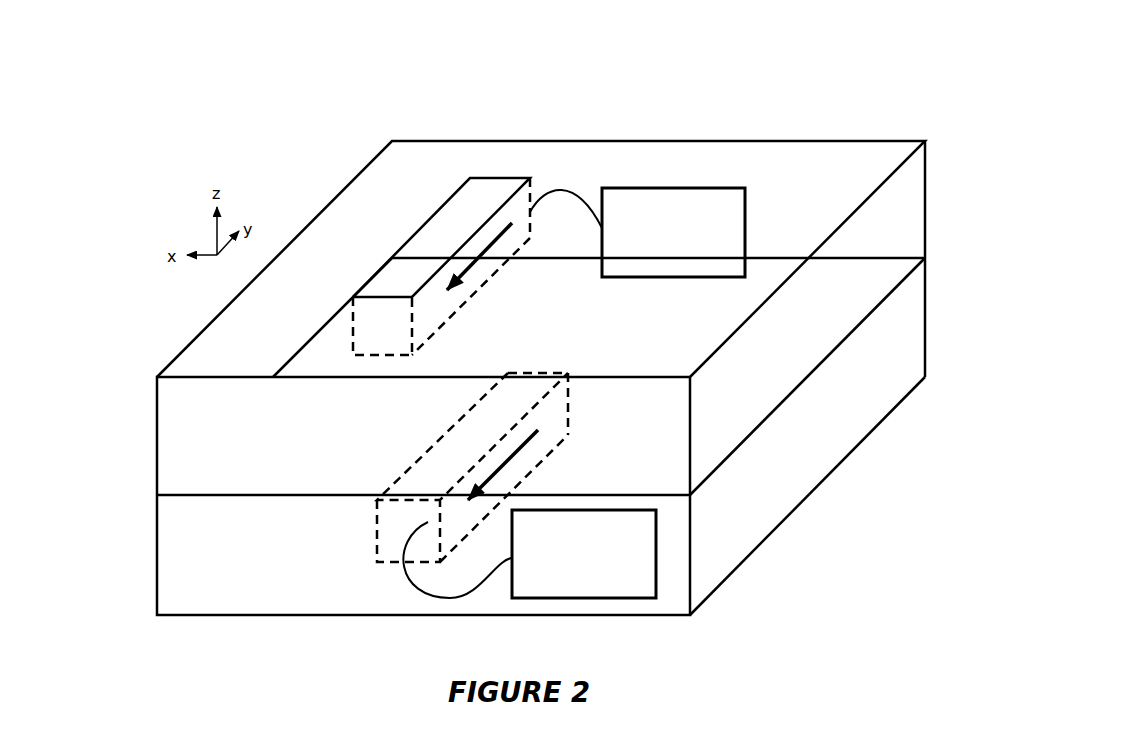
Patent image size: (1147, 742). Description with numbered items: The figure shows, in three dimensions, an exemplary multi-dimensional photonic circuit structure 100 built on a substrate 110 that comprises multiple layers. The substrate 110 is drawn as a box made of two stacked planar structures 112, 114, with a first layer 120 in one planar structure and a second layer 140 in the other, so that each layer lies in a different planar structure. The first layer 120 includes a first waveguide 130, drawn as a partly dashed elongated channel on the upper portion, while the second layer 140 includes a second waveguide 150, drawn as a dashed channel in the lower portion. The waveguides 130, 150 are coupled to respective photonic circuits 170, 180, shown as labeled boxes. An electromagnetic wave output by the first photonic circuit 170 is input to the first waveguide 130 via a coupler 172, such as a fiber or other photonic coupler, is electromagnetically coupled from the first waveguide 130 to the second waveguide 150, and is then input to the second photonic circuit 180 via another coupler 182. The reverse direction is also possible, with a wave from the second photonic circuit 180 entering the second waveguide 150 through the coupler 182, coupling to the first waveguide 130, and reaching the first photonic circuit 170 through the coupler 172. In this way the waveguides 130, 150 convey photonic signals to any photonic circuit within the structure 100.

The multi-dimensional photonic circuit structure 100 is at (702, 80).
The substrate 110 is at (140, 375).
The planar structure 112 is at (912, 243).
The planar structure 114 is at (907, 325).
The first layer 120 is at (770, 122).
The first waveguide 130 is at (473, 210).
The second layer 140 is at (843, 490).
The second waveguide 150 is at (400, 508).
The first photonic circuit 170 is at (643, 197).
The coupler 172 is at (557, 190).
The second photonic circuit 180 is at (633, 560).
The coupler 182 is at (420, 590).